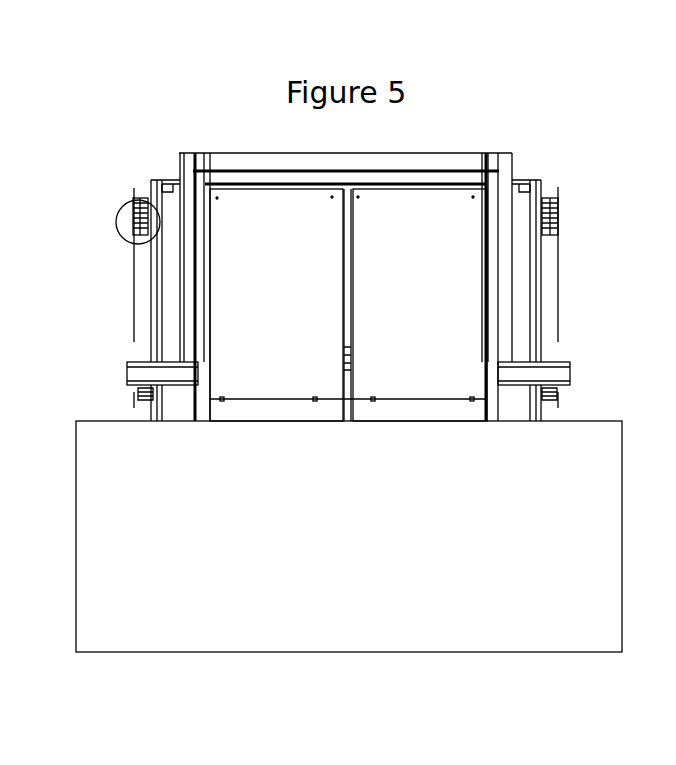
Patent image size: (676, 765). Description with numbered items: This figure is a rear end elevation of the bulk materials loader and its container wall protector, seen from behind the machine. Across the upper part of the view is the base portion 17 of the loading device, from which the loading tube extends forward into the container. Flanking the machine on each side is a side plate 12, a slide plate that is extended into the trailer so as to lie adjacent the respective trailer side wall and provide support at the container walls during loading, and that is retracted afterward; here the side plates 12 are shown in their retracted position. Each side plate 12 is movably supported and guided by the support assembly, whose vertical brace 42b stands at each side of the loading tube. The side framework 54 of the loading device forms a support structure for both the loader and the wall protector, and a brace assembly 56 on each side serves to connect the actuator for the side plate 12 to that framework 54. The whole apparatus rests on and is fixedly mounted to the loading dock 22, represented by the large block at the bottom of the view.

The base portion 17 is at (454, 136).
The vertical brace 42b is at (160, 186).
The side plate 12 is at (133, 296).
The framework 54 is at (205, 200).
The brace assembly 56 is at (113, 378).
The loading dock 22 is at (355, 561).